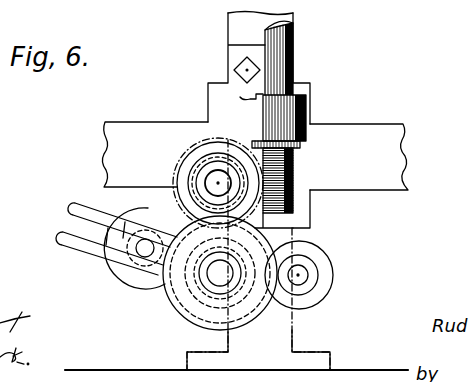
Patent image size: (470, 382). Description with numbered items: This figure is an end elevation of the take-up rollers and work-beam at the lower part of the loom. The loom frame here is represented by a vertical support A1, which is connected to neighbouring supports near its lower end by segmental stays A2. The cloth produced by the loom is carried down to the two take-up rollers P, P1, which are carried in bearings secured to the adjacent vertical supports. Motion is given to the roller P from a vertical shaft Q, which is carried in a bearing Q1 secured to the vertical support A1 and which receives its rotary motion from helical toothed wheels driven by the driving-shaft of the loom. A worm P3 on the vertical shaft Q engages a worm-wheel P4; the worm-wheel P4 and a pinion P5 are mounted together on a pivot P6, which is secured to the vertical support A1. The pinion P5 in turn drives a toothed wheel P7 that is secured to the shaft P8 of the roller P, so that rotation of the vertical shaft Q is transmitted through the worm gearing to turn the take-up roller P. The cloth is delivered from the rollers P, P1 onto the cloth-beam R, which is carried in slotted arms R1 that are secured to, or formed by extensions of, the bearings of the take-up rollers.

The vertical support A1 is at (236, 191).
The segmental stay A2 is at (419, 157).
The vertical shaft Q is at (294, 37).
The bearing Q1 is at (305, 110).
The worm P3 is at (296, 170).
The worm-wheel P4 is at (182, 167).
The pinion P5 is at (212, 161).
The pivot P6 is at (215, 187).
The take-up roller P is at (200, 291).
The toothed wheel P7 is at (196, 302).
The shaft P8 is at (212, 278).
The take-up roller P1 is at (334, 278).
The cloth-beam R is at (121, 268).
The slotted arm R1 is at (88, 247).